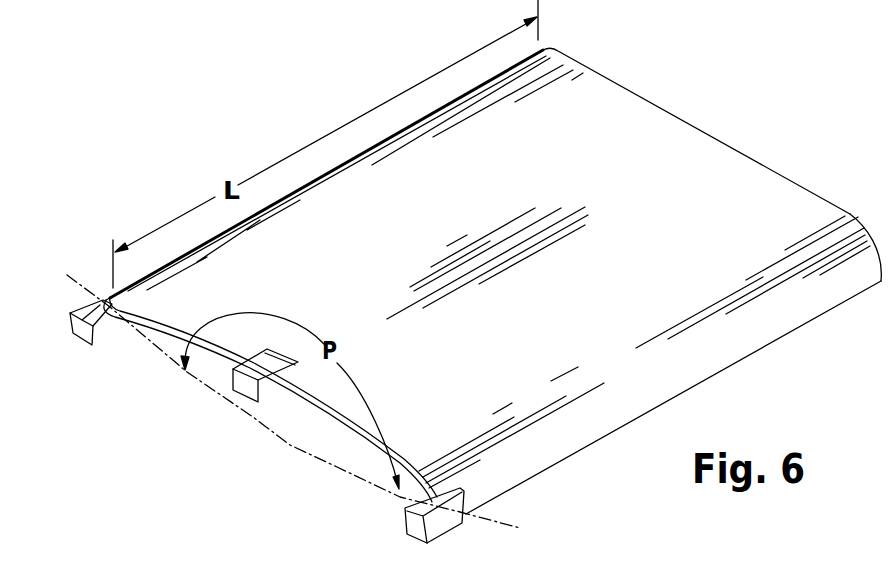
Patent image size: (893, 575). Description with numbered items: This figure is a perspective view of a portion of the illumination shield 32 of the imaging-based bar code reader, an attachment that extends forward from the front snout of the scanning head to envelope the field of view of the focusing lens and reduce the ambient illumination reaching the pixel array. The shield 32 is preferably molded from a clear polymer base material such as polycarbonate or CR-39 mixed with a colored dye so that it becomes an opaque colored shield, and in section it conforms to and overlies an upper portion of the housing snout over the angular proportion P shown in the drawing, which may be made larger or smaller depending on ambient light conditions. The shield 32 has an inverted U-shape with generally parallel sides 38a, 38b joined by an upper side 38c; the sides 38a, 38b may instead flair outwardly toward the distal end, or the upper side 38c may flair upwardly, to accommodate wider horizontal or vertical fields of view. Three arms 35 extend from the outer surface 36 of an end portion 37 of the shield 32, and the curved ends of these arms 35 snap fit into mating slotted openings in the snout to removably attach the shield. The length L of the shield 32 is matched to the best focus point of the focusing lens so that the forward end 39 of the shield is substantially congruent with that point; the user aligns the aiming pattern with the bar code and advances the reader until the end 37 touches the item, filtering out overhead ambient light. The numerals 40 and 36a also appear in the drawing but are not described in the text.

The illumination shield 32 is at (591, 99).
The arms 35 is at (82, 332).
The outer surface 36 is at (553, 445).
The end portion 37 is at (355, 430).
The side 38a is at (630, 393).
The side 38b is at (112, 322).
The upper side 38c is at (502, 207).
The forward end 39 is at (777, 163).
The element 40 is at (103, 570).
The element 36a is at (282, 570).